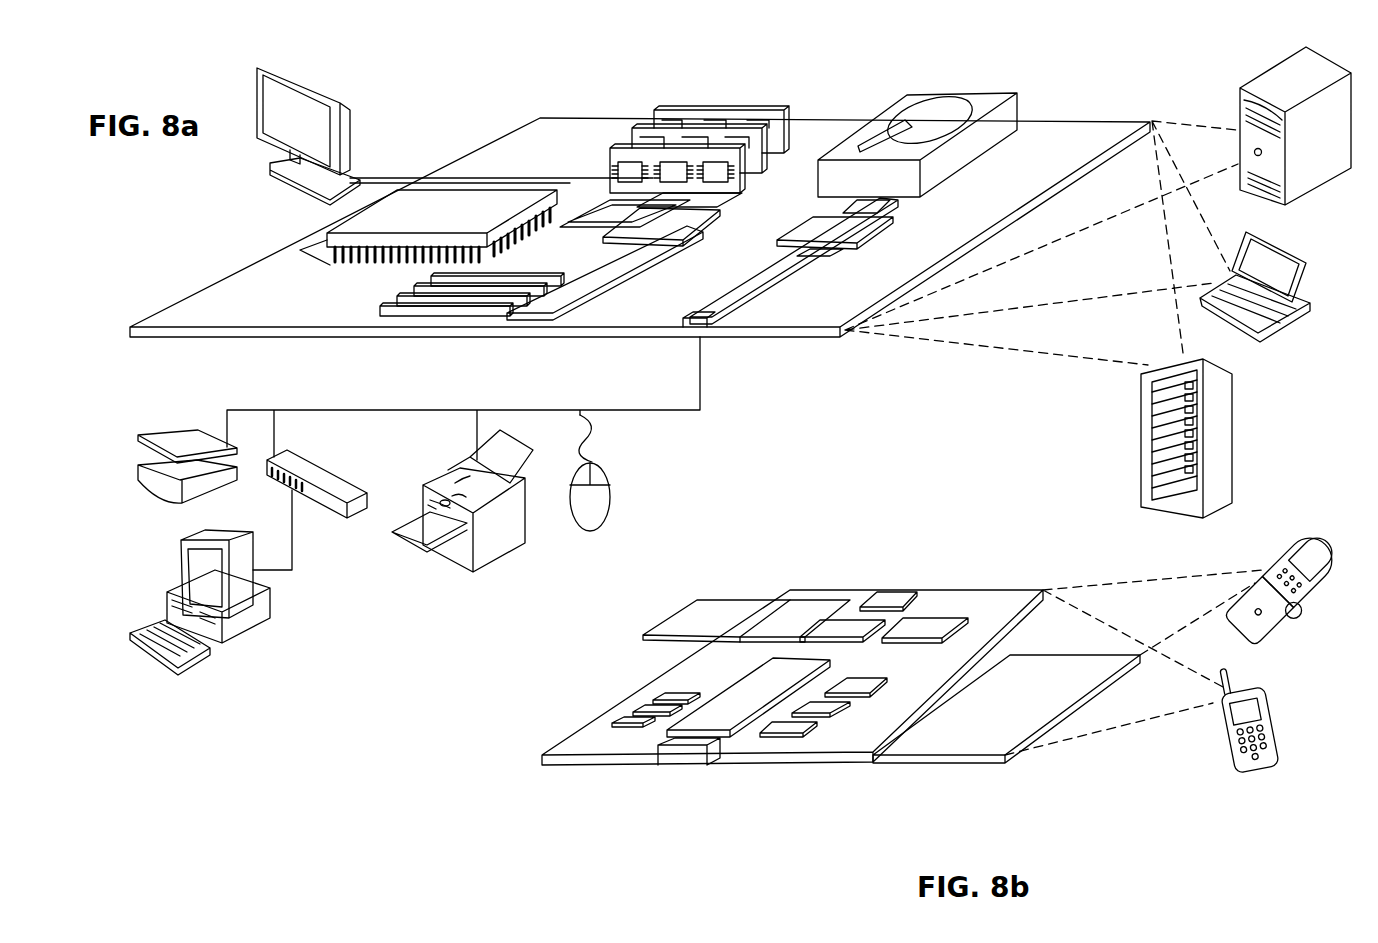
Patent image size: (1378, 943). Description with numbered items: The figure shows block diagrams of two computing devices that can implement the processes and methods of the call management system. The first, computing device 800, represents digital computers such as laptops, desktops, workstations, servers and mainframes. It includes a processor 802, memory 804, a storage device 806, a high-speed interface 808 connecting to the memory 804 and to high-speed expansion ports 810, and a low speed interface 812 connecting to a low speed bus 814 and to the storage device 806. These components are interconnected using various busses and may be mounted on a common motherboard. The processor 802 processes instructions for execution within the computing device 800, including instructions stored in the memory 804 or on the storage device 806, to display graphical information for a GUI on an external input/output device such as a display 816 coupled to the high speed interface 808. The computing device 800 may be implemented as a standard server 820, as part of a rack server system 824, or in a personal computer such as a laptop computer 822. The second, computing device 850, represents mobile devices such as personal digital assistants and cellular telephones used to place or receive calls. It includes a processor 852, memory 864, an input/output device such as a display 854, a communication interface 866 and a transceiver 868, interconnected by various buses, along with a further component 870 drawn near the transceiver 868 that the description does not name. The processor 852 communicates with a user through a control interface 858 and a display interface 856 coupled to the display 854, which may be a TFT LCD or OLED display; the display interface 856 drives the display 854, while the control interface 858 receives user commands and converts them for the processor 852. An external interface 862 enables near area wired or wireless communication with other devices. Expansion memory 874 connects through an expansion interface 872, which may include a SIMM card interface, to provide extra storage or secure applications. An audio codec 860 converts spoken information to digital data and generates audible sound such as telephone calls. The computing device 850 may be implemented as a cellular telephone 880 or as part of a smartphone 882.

In FIG. 8a, the computing device 800 is at (459, 92).
In FIG. 8a, the processor 802 is at (327, 242).
In FIG. 8a, the memory 804 is at (670, 112).
In FIG. 8a, the storage device 806 is at (912, 100).
In FIG. 8a, the high-speed interface 808 is at (637, 222).
In FIG. 8a, the high-speed expansion ports 810 is at (403, 297).
In FIG. 8a, the low speed interface 812 is at (815, 228).
In FIG. 8a, the low speed bus 814 is at (707, 327).
In FIG. 8a, the display 816 is at (267, 63).
In FIG. 8a, the standard server 820 is at (1238, 106).
In FIG. 8a, the laptop computer 822 is at (1320, 262).
In FIG. 8a, the rack server system 824 is at (1144, 464).
In FIG. 8b, the computing device 850 is at (517, 763).
In FIG. 8b, the processor 852 is at (722, 720).
In FIG. 8b, the display 854 is at (965, 738).
In FIG. 8b, the display interface 856 is at (793, 730).
In FIG. 8b, the control interface 858 is at (826, 705).
In FIG. 8b, the audio codec 860 is at (858, 680).
In FIG. 8b, the external interface 862 is at (688, 745).
In FIG. 8b, the memory 864 is at (635, 712).
In FIG. 8b, the communication interface 866 is at (845, 630).
In FIG. 8b, the transceiver 868 is at (925, 630).
In FIG. 8b, the chip 870 is at (897, 599).
In FIG. 8b, the expansion interface 872 is at (777, 600).
In FIG. 8b, the expansion memory 874 is at (700, 603).
In FIG. 8b, the cellular telephone 880 is at (1283, 545).
In FIG. 8b, the smartphone 882 is at (1226, 725).